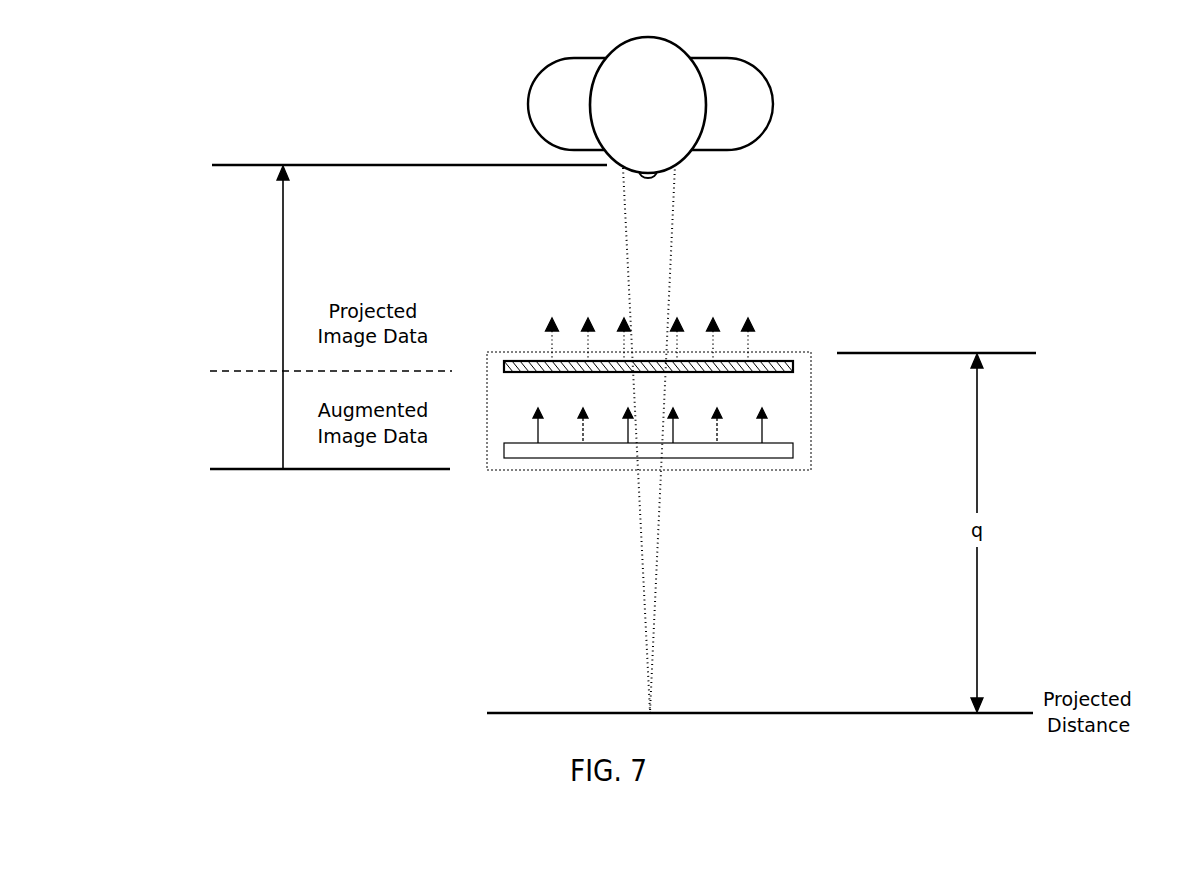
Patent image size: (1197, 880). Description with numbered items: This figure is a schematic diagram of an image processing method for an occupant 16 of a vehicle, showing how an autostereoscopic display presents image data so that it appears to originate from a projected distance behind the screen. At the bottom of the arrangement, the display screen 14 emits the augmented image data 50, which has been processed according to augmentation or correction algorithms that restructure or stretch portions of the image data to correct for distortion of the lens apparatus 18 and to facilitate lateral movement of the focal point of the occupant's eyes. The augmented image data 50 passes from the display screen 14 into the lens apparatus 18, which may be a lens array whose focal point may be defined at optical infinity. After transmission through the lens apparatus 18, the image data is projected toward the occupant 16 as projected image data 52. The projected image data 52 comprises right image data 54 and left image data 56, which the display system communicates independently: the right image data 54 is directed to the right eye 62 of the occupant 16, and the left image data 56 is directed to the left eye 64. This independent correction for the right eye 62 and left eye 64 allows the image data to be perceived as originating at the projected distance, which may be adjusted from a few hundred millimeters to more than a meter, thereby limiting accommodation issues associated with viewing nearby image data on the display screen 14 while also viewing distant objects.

The occupant 16 is at (560, 82).
The right eye 62 is at (623, 168).
The left eye 64 is at (677, 165).
The right image data 54 is at (630, 330).
The left image data 56 is at (682, 330).
The projected image data 52 is at (772, 310).
The lens apparatus 18 is at (770, 360).
The augmented image data 50 is at (786, 418).
The display screen 14 is at (1000, 352).